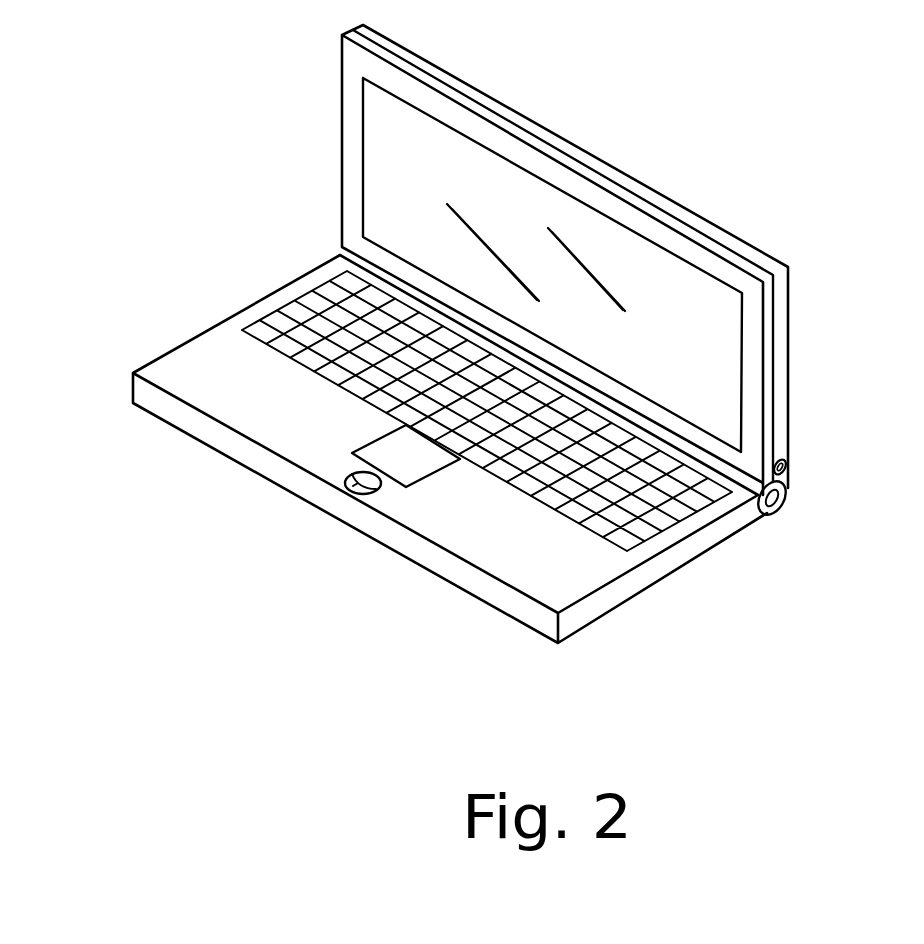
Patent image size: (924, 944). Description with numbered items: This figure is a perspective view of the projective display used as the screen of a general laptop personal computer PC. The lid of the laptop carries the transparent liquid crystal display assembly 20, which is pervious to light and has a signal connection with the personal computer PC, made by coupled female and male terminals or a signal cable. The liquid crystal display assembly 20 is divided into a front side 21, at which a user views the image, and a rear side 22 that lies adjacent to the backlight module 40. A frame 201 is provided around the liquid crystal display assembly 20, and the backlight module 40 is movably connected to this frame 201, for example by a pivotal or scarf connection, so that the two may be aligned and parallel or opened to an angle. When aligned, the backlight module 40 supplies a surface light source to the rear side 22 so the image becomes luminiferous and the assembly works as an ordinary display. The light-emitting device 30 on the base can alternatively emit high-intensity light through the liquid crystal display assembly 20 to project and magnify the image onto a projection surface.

The personal computer PC is at (210, 355).
The liquid crystal display assembly 20 is at (865, 237).
The front side 21 is at (707, 335).
The rear side 22 is at (775, 320).
The frame 201 is at (707, 260).
The light-emitting device 30 is at (347, 487).
The backlight module 40 is at (762, 248).